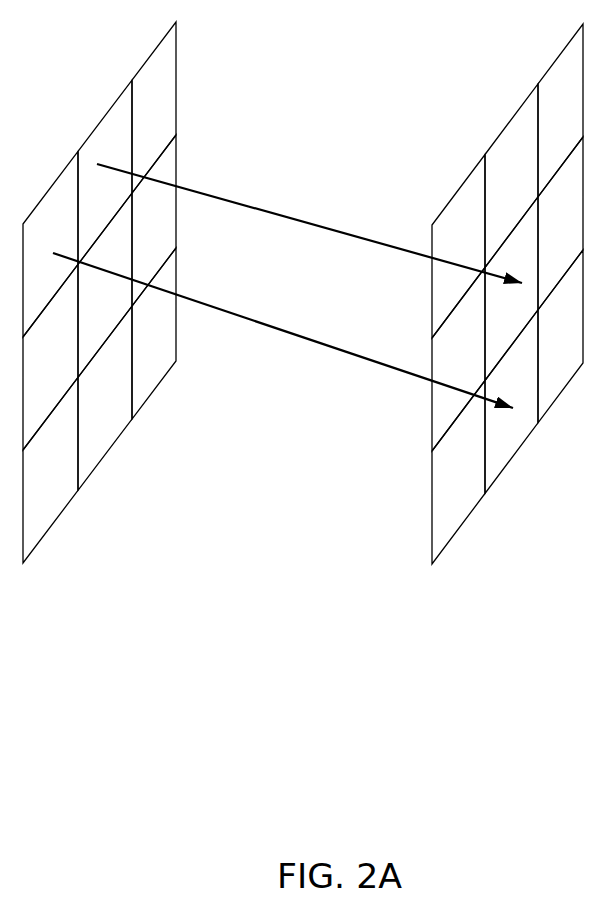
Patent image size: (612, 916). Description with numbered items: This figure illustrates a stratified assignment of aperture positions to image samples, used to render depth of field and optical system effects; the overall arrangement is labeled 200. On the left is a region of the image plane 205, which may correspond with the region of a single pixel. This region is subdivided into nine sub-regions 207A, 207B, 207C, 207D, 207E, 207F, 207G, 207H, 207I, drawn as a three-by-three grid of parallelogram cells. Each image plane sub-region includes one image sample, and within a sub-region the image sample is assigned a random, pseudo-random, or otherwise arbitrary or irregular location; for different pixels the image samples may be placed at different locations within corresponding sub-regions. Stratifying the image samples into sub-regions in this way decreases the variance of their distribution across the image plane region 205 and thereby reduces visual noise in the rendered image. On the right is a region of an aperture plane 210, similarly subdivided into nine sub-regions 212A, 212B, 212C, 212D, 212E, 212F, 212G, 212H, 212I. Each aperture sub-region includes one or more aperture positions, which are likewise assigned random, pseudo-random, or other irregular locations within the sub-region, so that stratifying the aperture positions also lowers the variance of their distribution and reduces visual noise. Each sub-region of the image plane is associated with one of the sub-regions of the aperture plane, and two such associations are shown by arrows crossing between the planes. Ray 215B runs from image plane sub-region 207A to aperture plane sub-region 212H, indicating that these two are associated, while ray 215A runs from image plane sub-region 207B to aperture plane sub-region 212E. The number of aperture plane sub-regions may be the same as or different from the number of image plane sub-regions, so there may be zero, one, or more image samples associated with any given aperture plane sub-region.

The mapping system / arrangement of pixel grids 200 is at (303, 336).
The region of the image plane 205 is at (135, 76).
The image plane sub-region 207A is at (50, 244).
The image plane sub-region 207B is at (105, 172).
The image plane sub-region 207C is at (154, 107).
The image plane sub-region 207D is at (50, 357).
The image plane sub-region 207E is at (105, 285).
The image plane sub-region 207F is at (154, 220).
The image plane sub-region 207G is at (50, 470).
The image plane sub-region 207H is at (105, 398).
The image plane sub-region 207I is at (154, 333).
The region of an aperture plane 210 is at (482, 499).
The aperture plane sub-region 212A is at (458, 247).
The aperture plane sub-region 212B is at (511, 176).
The aperture plane sub-region 212C is at (560, 110).
The aperture plane sub-region 212D is at (458, 360).
The aperture plane sub-region 212E is at (511, 289).
The aperture plane sub-region 212F is at (560, 223).
The aperture plane sub-region 212G is at (458, 473).
The aperture plane sub-region 212H is at (511, 402).
The aperture plane sub-region 212I is at (560, 336).
The ray 215A is at (357, 237).
The ray 215B is at (357, 353).